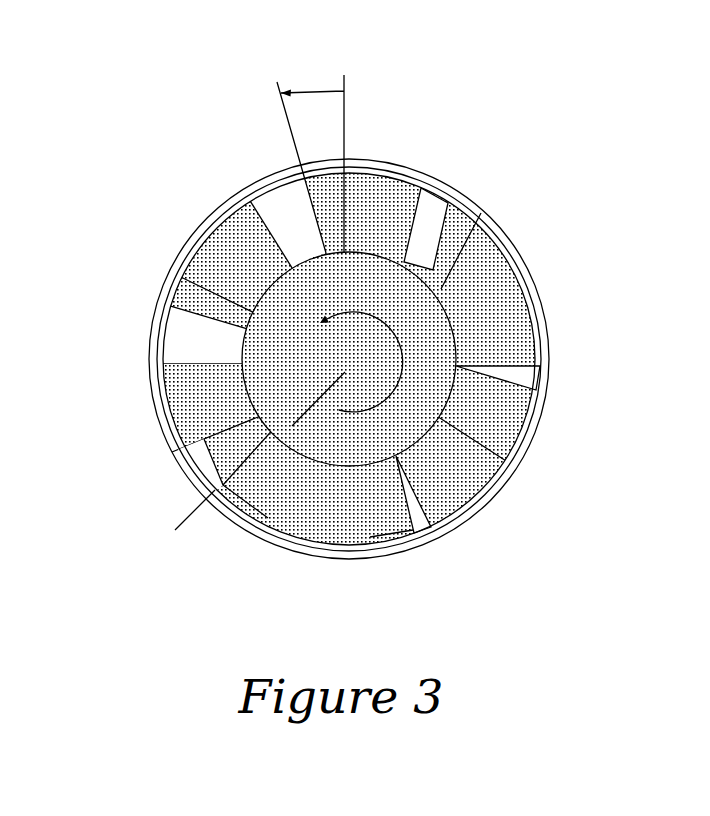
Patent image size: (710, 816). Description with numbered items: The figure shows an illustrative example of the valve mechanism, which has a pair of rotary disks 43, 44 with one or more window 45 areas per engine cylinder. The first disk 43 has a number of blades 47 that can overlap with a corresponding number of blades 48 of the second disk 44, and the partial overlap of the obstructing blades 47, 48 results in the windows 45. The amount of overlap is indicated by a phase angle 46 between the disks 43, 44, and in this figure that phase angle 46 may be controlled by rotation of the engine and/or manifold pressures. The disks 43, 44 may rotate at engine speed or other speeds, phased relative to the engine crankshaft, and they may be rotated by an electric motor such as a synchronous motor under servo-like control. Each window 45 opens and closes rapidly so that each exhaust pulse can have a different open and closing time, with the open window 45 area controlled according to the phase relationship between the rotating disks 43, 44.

The rotary disk 43 is at (480, 210).
The rotary disk 44 is at (458, 200).
The window 45 is at (278, 202).
The phase angle 46 is at (318, 90).
The blade 47 is at (390, 168).
The blade 48 is at (420, 205).